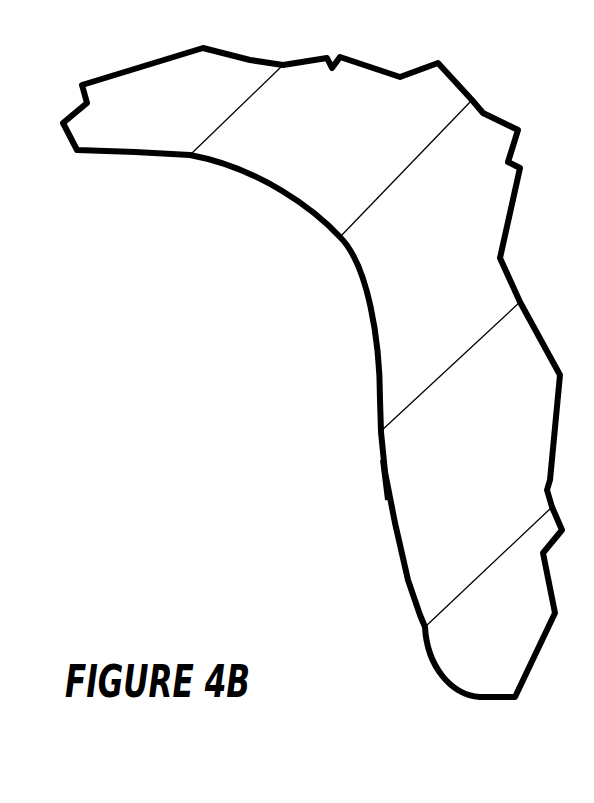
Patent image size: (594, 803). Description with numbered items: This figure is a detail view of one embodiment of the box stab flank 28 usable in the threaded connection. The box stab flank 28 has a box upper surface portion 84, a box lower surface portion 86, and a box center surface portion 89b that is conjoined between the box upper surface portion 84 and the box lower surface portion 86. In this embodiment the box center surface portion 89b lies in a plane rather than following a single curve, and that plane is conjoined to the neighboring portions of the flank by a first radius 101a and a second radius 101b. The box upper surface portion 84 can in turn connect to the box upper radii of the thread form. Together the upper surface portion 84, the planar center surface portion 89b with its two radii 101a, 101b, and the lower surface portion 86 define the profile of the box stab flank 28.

The box stab flank 28 is at (243, 525).
The box upper surface portion 84 is at (407, 585).
The box lower surface portion 86 is at (378, 432).
The box center surface portion 89b is at (385, 509).
The first radius 101a is at (417, 472).
The second radius 101b is at (425, 523).